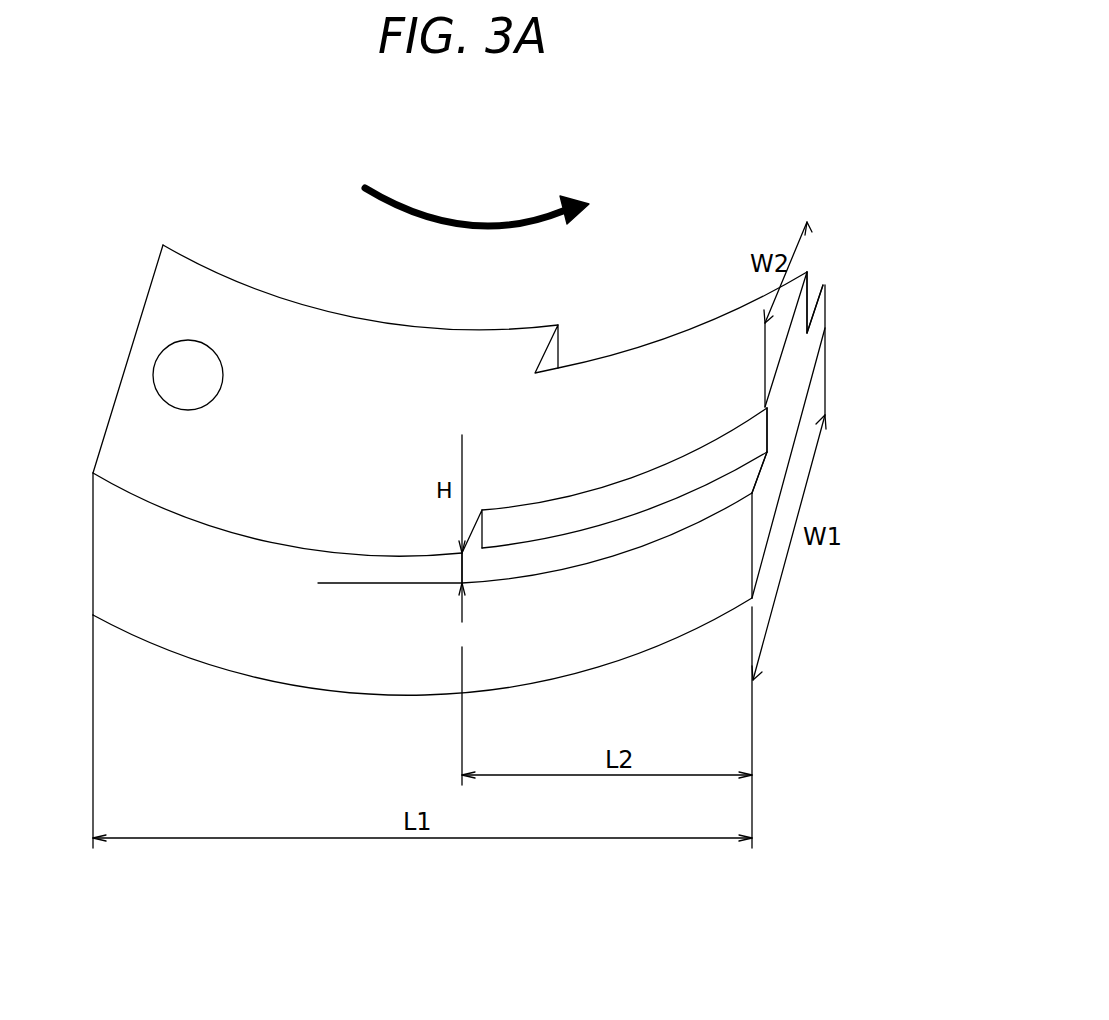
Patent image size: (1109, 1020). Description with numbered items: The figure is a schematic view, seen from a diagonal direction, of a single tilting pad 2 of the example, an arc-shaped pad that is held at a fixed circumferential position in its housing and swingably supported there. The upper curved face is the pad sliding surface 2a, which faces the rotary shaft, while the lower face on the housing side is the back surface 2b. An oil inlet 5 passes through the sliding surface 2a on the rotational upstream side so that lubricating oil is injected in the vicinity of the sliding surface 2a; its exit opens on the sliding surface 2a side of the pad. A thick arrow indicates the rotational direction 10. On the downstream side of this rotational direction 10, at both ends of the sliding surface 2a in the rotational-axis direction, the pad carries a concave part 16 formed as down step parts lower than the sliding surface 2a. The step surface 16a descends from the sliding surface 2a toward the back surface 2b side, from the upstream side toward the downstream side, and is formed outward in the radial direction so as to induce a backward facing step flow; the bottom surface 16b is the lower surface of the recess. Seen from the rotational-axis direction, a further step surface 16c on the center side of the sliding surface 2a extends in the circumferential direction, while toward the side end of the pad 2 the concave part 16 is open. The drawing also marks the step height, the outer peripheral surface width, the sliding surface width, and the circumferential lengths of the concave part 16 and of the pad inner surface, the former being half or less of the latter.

The tilting pad 2 is at (198, 222).
The sliding surface 2a is at (675, 368).
The back surface 2b is at (162, 646).
The oil inlet 5 is at (163, 348).
The rotational direction 10 is at (430, 210).
The concave part 16 is at (642, 427).
The step surface 16a is at (553, 357).
The bottom surface 16b is at (813, 297).
The step surface 16c is at (742, 450).